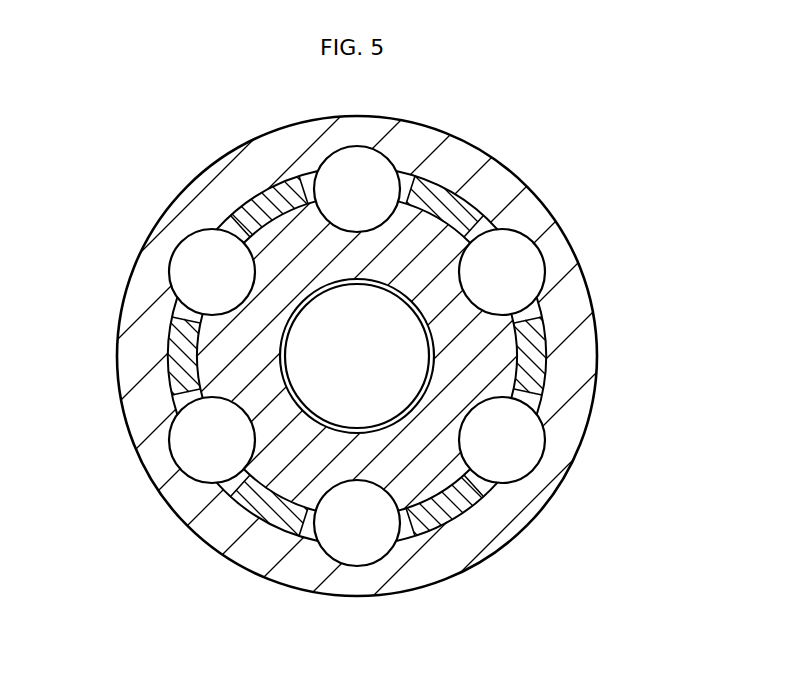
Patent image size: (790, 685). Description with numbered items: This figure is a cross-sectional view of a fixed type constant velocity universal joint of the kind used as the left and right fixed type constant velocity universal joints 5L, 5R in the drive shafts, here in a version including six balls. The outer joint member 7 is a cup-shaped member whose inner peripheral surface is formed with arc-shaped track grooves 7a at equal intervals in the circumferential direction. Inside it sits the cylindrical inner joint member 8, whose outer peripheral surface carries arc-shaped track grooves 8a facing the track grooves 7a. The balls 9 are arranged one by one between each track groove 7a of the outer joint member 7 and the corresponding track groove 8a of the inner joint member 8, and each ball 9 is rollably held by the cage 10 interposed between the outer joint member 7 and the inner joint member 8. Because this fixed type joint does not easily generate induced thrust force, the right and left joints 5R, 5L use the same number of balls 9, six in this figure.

The fixed type constant velocity universal joint 5L is at (388, 356).
The fixed type constant velocity universal joint 5R is at (555, 179).
The outer joint member 7 is at (203, 207).
The track groove 7a is at (532, 265).
The inner joint member 8 is at (212, 362).
The track groove 8a is at (467, 417).
The ball 9 is at (337, 537).
The cage 10 is at (453, 512).